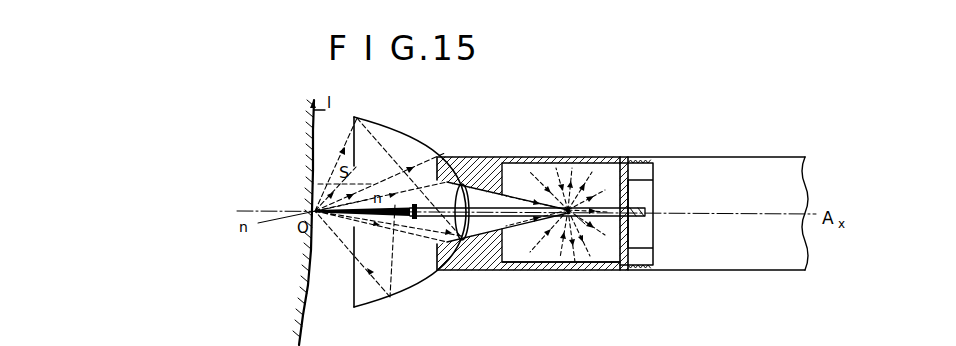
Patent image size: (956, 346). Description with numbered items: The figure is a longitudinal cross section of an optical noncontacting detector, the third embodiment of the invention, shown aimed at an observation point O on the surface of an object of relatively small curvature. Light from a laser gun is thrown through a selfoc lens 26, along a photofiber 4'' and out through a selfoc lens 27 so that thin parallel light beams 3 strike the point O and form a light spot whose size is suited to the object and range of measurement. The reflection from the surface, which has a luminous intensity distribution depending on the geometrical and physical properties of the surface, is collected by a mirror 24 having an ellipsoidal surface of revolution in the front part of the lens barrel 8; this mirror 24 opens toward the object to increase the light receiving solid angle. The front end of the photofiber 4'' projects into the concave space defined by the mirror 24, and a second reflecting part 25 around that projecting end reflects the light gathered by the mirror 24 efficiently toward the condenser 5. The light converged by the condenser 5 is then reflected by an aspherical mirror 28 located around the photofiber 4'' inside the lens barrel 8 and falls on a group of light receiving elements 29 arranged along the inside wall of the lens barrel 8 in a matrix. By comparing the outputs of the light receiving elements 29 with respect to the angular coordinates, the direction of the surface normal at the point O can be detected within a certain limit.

The thin parallel light beams 3 is at (697, 215).
The condenser 5 is at (456, 195).
The lens barrel 8 is at (462, 159).
The mirror 24 is at (392, 298).
The second reflecting part 25 is at (398, 234).
The selfoc lens 26 is at (634, 224).
The selfoc lens 27 is at (406, 227).
The aspherical mirror 28 is at (574, 263).
The group of light receiving elements 29 is at (517, 163).
The photofiber 4'' is at (594, 234).